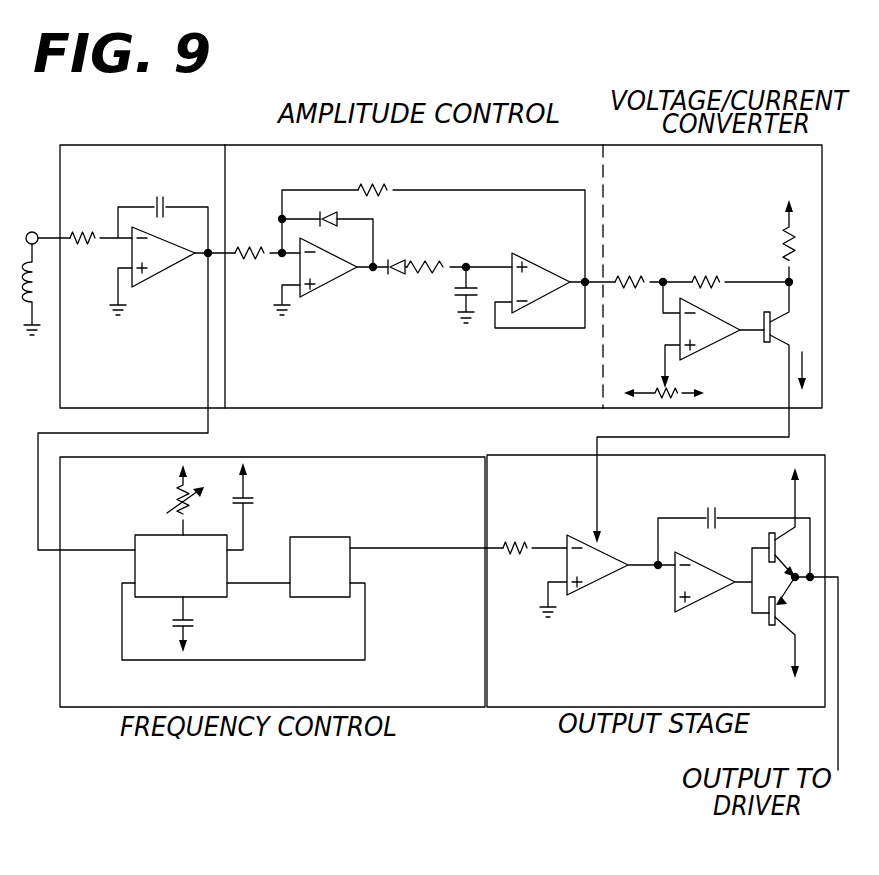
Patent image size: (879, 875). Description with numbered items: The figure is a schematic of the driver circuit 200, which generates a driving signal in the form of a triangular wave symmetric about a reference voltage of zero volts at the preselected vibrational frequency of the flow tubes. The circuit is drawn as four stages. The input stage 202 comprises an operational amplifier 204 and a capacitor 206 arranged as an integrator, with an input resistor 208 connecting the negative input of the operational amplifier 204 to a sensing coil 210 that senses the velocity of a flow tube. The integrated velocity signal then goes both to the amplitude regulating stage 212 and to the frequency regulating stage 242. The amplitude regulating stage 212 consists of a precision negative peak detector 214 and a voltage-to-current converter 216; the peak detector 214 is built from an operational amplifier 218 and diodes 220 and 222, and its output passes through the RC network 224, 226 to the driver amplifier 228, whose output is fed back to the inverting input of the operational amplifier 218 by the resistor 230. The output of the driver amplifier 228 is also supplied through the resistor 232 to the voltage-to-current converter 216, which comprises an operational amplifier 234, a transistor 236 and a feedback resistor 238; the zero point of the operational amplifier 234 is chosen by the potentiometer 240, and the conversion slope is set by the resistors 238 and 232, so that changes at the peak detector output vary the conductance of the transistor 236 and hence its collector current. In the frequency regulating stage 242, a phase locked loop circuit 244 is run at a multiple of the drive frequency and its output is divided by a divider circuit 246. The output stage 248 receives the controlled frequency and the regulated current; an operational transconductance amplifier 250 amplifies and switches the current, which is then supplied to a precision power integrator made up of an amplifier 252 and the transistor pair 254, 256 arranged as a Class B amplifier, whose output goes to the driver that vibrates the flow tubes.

The driver circuit 200 is at (228, 131).
The input stage 202 is at (178, 381).
The operational amplifier 204 is at (168, 250).
The capacitor 206 is at (168, 208).
The input resistor 208 is at (92, 234).
The sensing coil 210 is at (24, 270).
The amplitude regulating stage 212 is at (420, 236).
The precision negative peak detector 214 is at (392, 379).
The voltage-to-current converter 216 is at (675, 201).
The operational amplifier 218 is at (327, 270).
The diode 220 is at (328, 214).
The diode 222 is at (438, 240).
The RC network resistor 224 is at (450, 265).
The RC network capacitor 226 is at (455, 290).
The driver amplifier 228 is at (540, 275).
The resistor 230 is at (376, 186).
The resistor 232 is at (655, 250).
The operational amplifier 234 is at (710, 337).
The transistor 236 is at (778, 328).
The feedback resistor 238 is at (748, 250).
The potentiometer 240 is at (652, 387).
The frequency regulating stage 242 is at (372, 507).
The phase locked loop circuit 244 is at (150, 542).
The divider circuit 246 is at (328, 565).
The output stage 248 is at (670, 490).
The operational transconductance amplifier 250 is at (580, 537).
The amplifier 252 is at (693, 566).
The transistor 254 is at (790, 545).
The transistor 256 is at (780, 613).